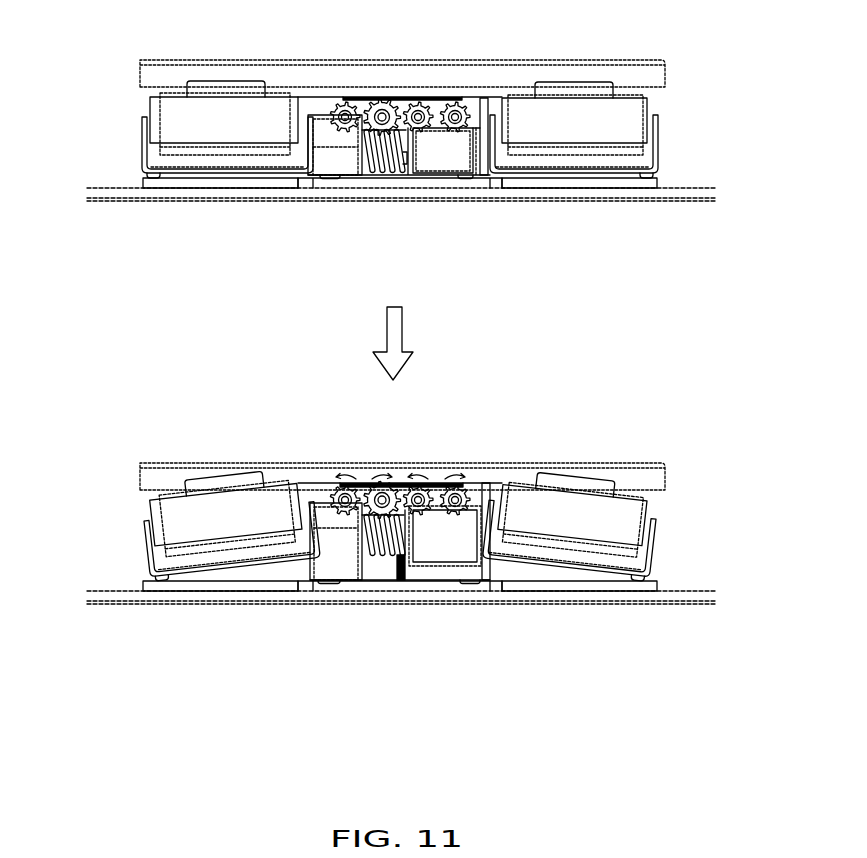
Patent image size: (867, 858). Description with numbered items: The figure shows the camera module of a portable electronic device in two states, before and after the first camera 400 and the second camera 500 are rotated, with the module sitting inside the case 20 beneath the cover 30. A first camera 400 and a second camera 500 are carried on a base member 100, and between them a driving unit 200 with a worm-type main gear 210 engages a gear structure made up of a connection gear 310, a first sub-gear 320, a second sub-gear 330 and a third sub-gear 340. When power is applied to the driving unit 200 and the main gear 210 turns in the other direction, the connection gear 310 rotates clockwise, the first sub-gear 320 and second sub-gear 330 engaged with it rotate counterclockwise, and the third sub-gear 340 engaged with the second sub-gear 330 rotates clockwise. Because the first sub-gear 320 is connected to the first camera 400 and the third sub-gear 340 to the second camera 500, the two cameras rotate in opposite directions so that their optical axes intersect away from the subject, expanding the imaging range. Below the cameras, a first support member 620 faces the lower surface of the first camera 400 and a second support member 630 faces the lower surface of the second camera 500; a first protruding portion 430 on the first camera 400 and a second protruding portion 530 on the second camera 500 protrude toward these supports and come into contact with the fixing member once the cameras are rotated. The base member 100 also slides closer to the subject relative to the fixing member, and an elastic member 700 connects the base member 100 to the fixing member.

The case 20 is at (101, 202).
The cover 30 is at (140, 72).
The base member 100 is at (323, 125).
The driving unit 200 is at (443, 160).
The main gear 210 is at (382, 176).
The connection gear 310 is at (395, 97).
The first sub-gear 320 is at (352, 97).
The second sub-gear 330 is at (428, 97).
The third sub-gear 340 is at (467, 97).
The first camera 400 is at (168, 113).
The first protruding portion 430 is at (143, 177).
The second camera 500 is at (640, 110).
The second protruding portion 530 is at (655, 176).
The first support member 620 is at (205, 182).
The second support member 630 is at (581, 182).
The elastic member 700 is at (406, 583).